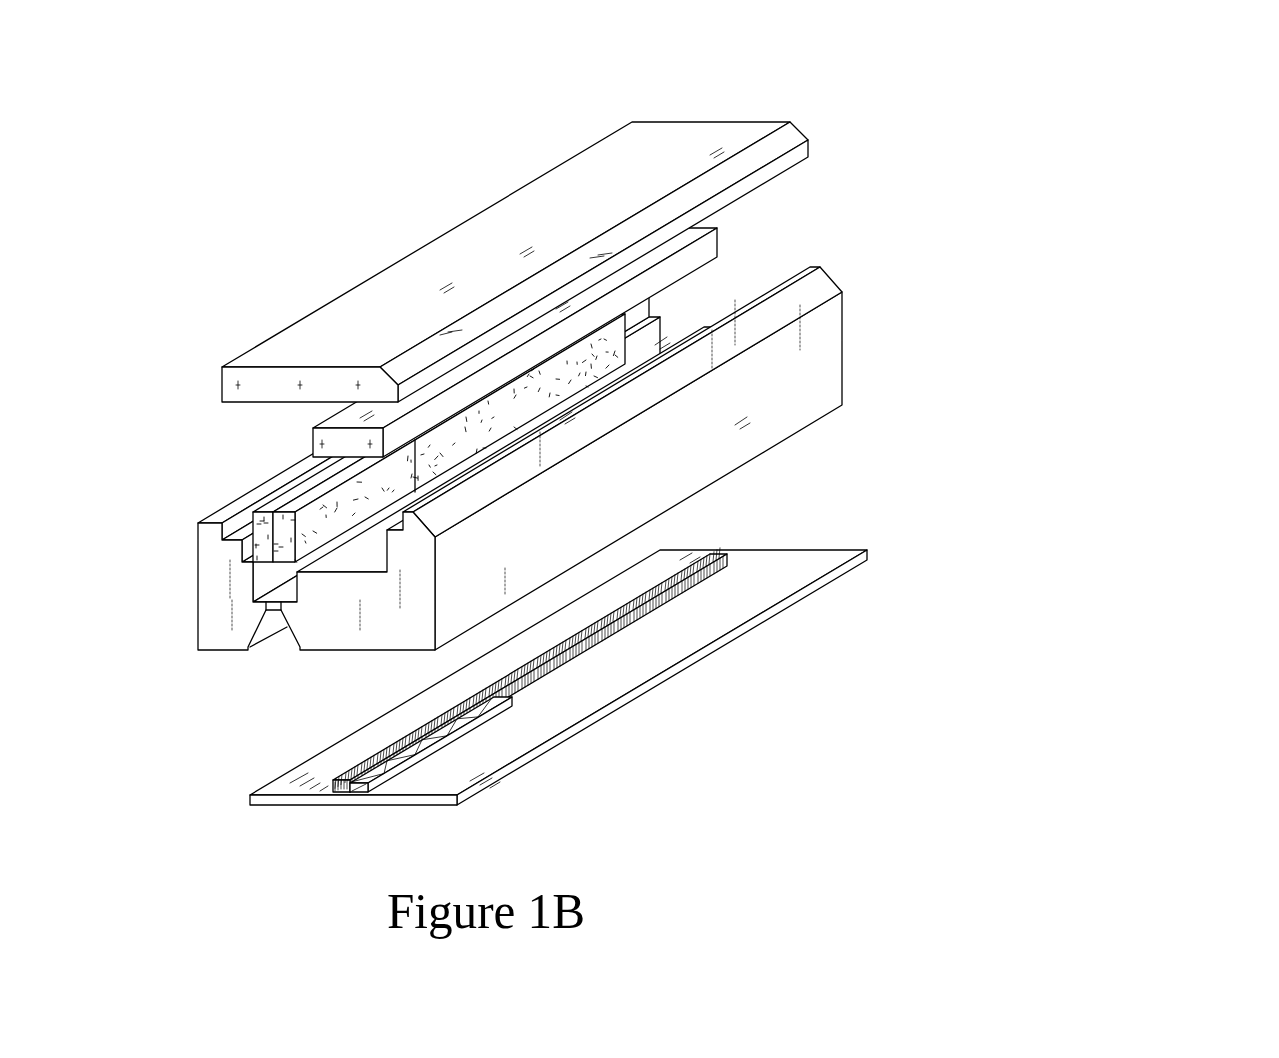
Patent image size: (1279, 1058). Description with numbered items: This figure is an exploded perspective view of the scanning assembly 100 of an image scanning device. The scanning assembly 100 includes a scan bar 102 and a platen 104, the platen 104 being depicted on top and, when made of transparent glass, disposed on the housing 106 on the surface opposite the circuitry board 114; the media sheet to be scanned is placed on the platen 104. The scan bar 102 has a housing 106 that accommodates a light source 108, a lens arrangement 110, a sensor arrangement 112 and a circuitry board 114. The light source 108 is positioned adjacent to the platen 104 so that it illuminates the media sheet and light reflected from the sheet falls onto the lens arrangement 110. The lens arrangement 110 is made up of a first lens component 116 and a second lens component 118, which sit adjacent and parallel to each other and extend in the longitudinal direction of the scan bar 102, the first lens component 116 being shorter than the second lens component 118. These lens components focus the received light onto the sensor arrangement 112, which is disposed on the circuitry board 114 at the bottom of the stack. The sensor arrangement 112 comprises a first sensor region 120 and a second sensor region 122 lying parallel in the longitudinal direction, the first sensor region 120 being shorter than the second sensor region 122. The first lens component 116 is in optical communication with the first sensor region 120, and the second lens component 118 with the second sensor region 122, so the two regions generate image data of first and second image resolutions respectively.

The scanning assembly 100 is at (1053, 80).
The scan bar 102 is at (890, 214).
The platen 104 is at (300, 332).
The housing 106 is at (846, 346).
The light source 108 is at (712, 247).
The lens arrangement 110 is at (381, 438).
The sensor arrangement 112 is at (503, 698).
The circuitry board 114 is at (836, 553).
The first lens component 116 is at (285, 530).
The second lens component 118 is at (265, 498).
The first sensor region 120 is at (386, 783).
The second sensor region 122 is at (335, 779).